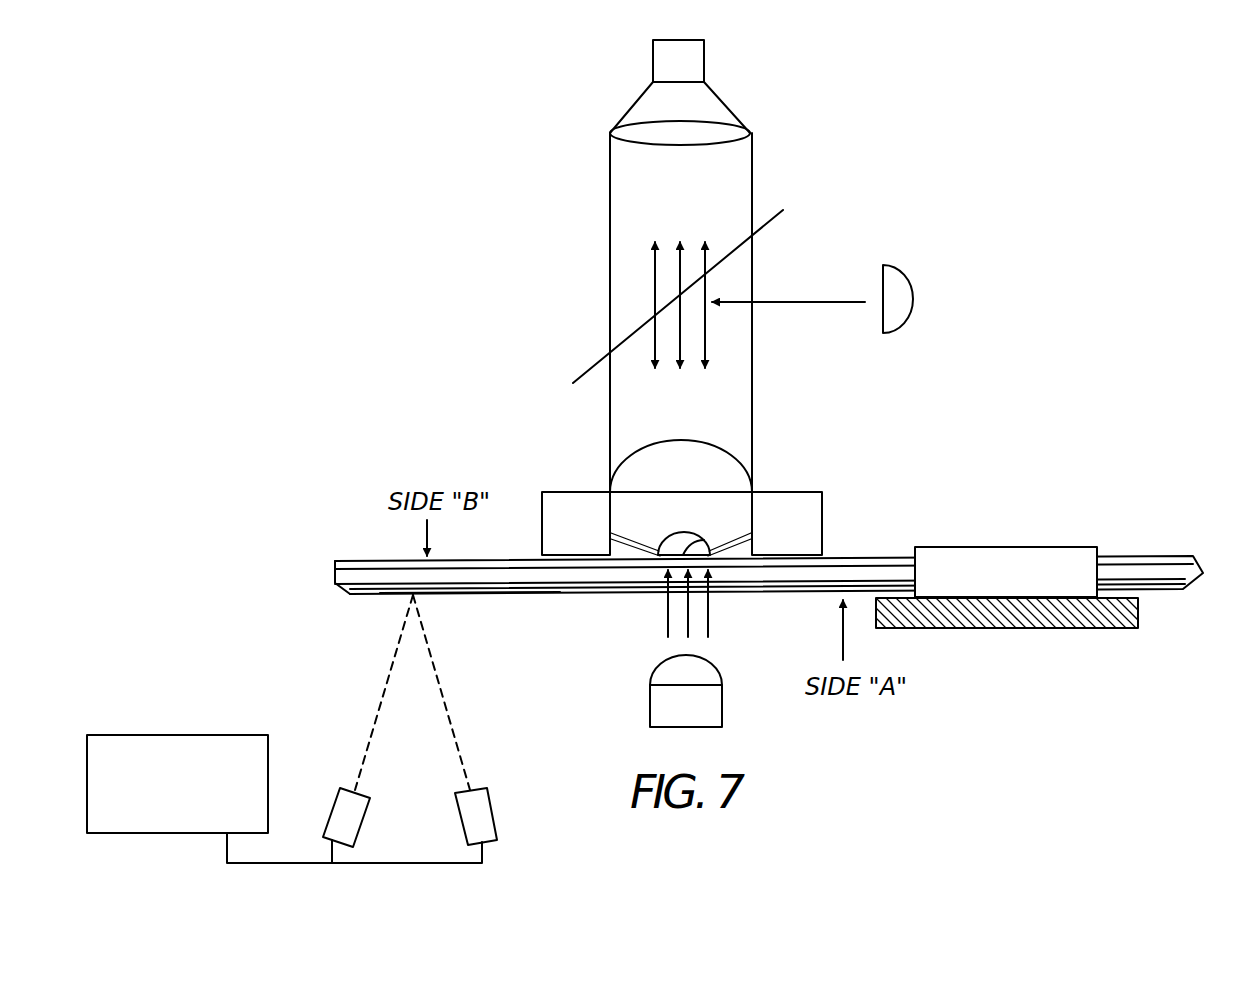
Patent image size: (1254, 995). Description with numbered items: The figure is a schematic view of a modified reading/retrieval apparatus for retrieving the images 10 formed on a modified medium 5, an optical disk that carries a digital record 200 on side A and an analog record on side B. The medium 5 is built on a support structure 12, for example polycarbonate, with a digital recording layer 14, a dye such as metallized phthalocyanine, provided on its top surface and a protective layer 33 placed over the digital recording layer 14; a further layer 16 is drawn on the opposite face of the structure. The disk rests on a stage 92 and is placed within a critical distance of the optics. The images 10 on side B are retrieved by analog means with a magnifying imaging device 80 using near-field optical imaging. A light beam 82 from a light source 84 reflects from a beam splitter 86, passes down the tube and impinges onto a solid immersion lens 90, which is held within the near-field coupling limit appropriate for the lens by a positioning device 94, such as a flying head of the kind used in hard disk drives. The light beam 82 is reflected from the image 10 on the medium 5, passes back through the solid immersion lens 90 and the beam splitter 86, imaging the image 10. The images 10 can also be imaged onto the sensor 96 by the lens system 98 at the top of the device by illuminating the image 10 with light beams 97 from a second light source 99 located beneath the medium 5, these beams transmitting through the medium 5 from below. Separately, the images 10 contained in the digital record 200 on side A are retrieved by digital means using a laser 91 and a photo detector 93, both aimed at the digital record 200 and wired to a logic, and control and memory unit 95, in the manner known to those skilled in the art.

The magnifying imaging device 80 is at (478, 192).
The sensor 96 is at (660, 63).
The lens system 98 is at (732, 128).
The light beam 82 is at (678, 254).
The beam splitter 86 is at (598, 362).
The light source 84 is at (900, 282).
The positioning device 94 is at (578, 500).
The solid immersion lens 90 is at (672, 541).
The images 10 is at (701, 545).
The modified medium 5 is at (355, 556).
The digital recording layer 14 is at (335, 566).
The bottom layer 16 is at (350, 590).
The digital record 200 is at (411, 597).
The protective layer 33 is at (520, 596).
The light beams 97 is at (663, 625).
The light source 99 is at (706, 670).
The logic, and control and memory unit 95 is at (172, 735).
The photo detector 93 is at (357, 800).
The laser 91 is at (483, 793).
The support structure 12 is at (1197, 573).
The stage 92 is at (1080, 625).